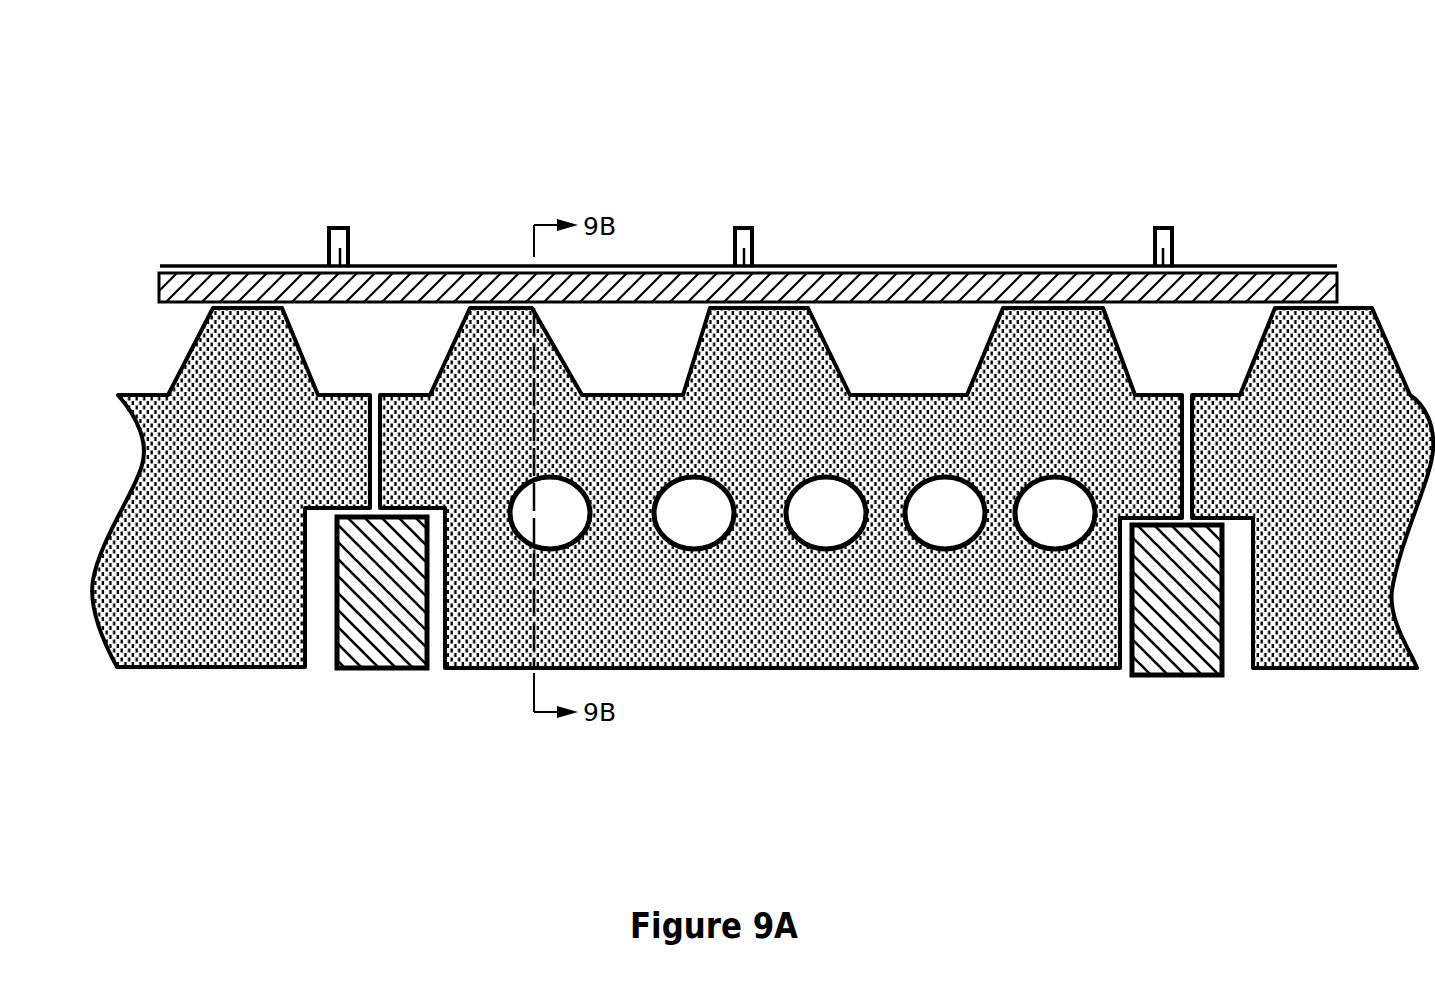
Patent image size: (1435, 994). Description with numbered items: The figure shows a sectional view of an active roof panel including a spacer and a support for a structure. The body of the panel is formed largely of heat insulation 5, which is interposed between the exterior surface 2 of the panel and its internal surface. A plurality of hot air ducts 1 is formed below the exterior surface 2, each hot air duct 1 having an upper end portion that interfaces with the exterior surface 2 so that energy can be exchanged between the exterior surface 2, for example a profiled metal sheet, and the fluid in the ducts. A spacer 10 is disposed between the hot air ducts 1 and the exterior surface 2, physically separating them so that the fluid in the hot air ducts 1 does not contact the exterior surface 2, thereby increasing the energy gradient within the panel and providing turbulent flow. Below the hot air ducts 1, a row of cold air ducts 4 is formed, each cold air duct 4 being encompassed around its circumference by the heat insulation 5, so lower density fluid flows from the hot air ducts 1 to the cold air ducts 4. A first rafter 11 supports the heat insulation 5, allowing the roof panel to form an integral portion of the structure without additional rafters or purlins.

The hot air duct 1 is at (762, 500).
The exterior surface 2 is at (343, 225).
The cold air duct 4 is at (694, 550).
The heat insulation 5 is at (973, 668).
The spacer 10 is at (908, 270).
The first rafter 11 is at (352, 668).